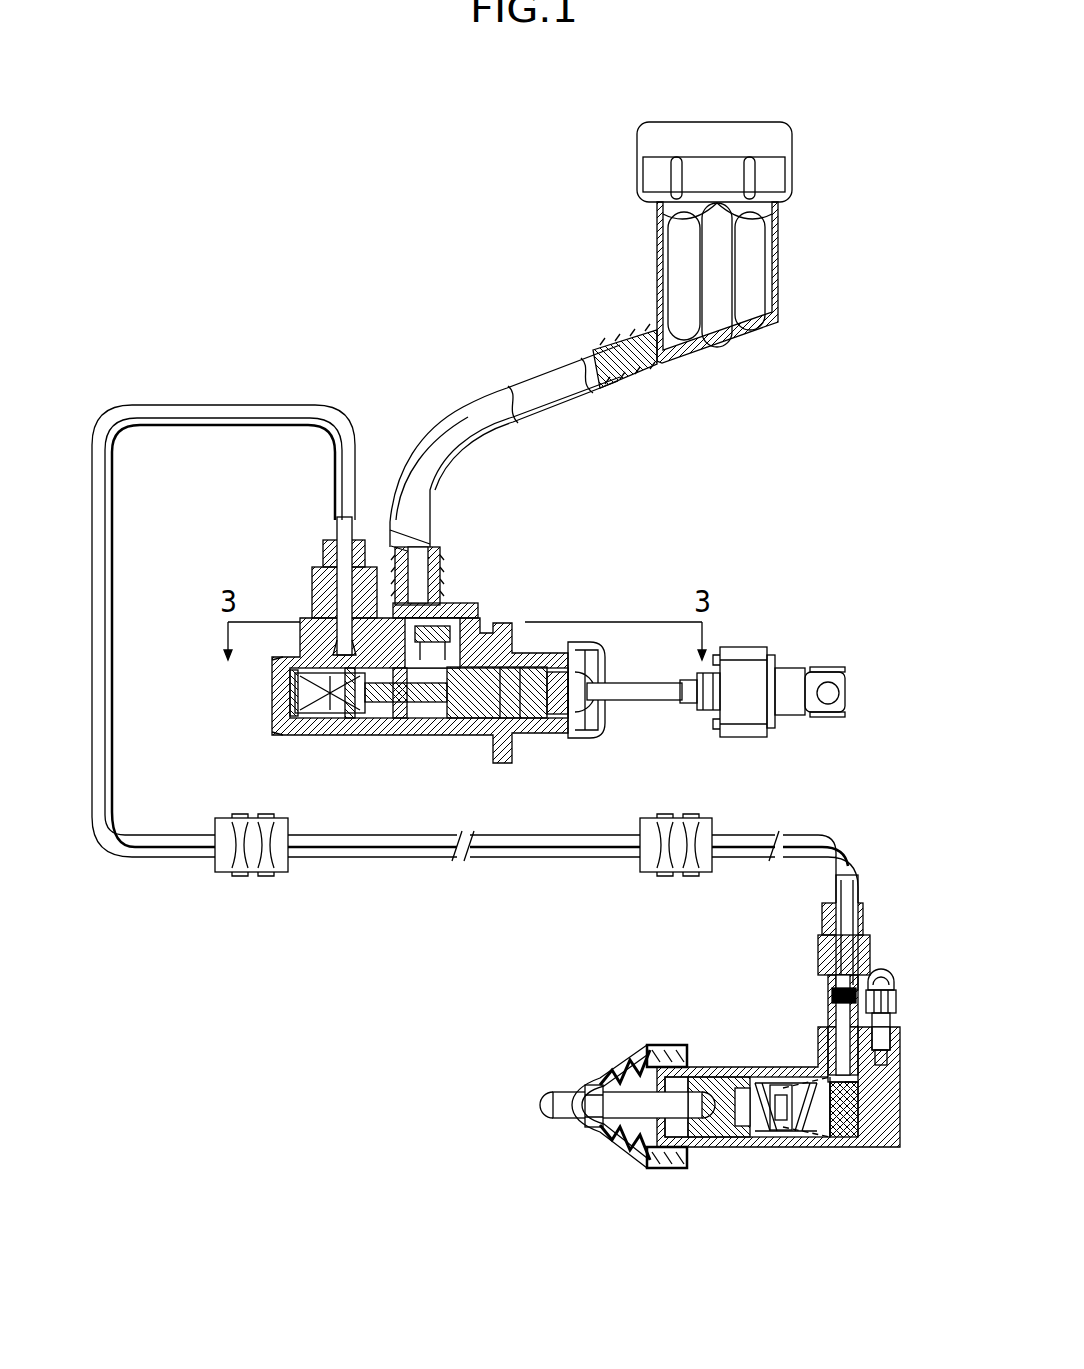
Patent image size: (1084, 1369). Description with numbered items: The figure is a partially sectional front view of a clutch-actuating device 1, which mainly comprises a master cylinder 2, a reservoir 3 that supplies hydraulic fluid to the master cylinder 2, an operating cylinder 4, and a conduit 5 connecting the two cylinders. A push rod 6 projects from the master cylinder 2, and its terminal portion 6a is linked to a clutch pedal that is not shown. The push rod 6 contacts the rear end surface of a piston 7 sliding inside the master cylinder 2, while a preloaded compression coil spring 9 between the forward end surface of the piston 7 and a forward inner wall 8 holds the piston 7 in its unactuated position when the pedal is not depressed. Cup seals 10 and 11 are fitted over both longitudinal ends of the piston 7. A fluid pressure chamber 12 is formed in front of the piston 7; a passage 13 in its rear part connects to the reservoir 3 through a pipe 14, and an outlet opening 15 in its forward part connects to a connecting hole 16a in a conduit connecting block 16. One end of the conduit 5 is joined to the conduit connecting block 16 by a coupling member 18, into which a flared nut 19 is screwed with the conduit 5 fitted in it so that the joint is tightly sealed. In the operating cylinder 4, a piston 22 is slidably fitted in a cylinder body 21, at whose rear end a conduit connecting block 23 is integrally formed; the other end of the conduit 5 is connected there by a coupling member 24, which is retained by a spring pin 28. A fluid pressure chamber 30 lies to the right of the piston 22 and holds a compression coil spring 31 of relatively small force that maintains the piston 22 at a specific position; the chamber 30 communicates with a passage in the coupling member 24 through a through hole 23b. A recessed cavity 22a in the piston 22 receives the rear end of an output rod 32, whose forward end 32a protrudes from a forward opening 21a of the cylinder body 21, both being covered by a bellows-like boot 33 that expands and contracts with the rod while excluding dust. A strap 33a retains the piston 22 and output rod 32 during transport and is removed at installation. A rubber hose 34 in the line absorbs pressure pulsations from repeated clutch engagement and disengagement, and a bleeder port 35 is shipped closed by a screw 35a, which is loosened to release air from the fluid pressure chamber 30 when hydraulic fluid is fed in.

The clutch-actuating device 1 is at (336, 296).
The master cylinder 2 is at (692, 566).
The reservoir 3 is at (765, 120).
The operating cylinder 4 is at (704, 1025).
The conduit 5 is at (225, 890).
The push rod 6 is at (640, 677).
The terminal portion 6a is at (852, 691).
The piston 7 is at (548, 632).
The forward inner wall 8 is at (270, 702).
The compression coil spring 9 is at (277, 681).
The cup seal 10 is at (440, 733).
The cup seal 11 is at (545, 735).
The fluid pressure chamber 12 is at (325, 703).
The passage 13 is at (470, 630).
The pipe 14 is at (497, 432).
The outlet opening 15 is at (348, 673).
The conduit connecting block 16 is at (387, 603).
The connecting hole 16a is at (358, 658).
The coupling member 18 is at (312, 582).
The flared nut 19 is at (325, 548).
The cylinder body 21 is at (805, 1147).
The forward opening 21a is at (620, 1160).
The piston 22 is at (745, 1147).
The recessed cavity 22a is at (727, 1147).
The conduit connecting block 23 is at (825, 1050).
The through hole 23b is at (866, 1147).
The coupling member 24 is at (872, 925).
The spring pin 28 is at (895, 1047).
The fluid pressure chamber 30 is at (885, 1125).
The compression coil spring 31 is at (850, 1147).
The output rod 32 is at (680, 1170).
The forward end 32a is at (575, 1082).
The bellows-like boot 33 is at (598, 1155).
The strap 33a is at (660, 1055).
The rubber hose 34 is at (383, 862).
The bleeder port 35 is at (893, 1022).
The screw 35a is at (893, 985).